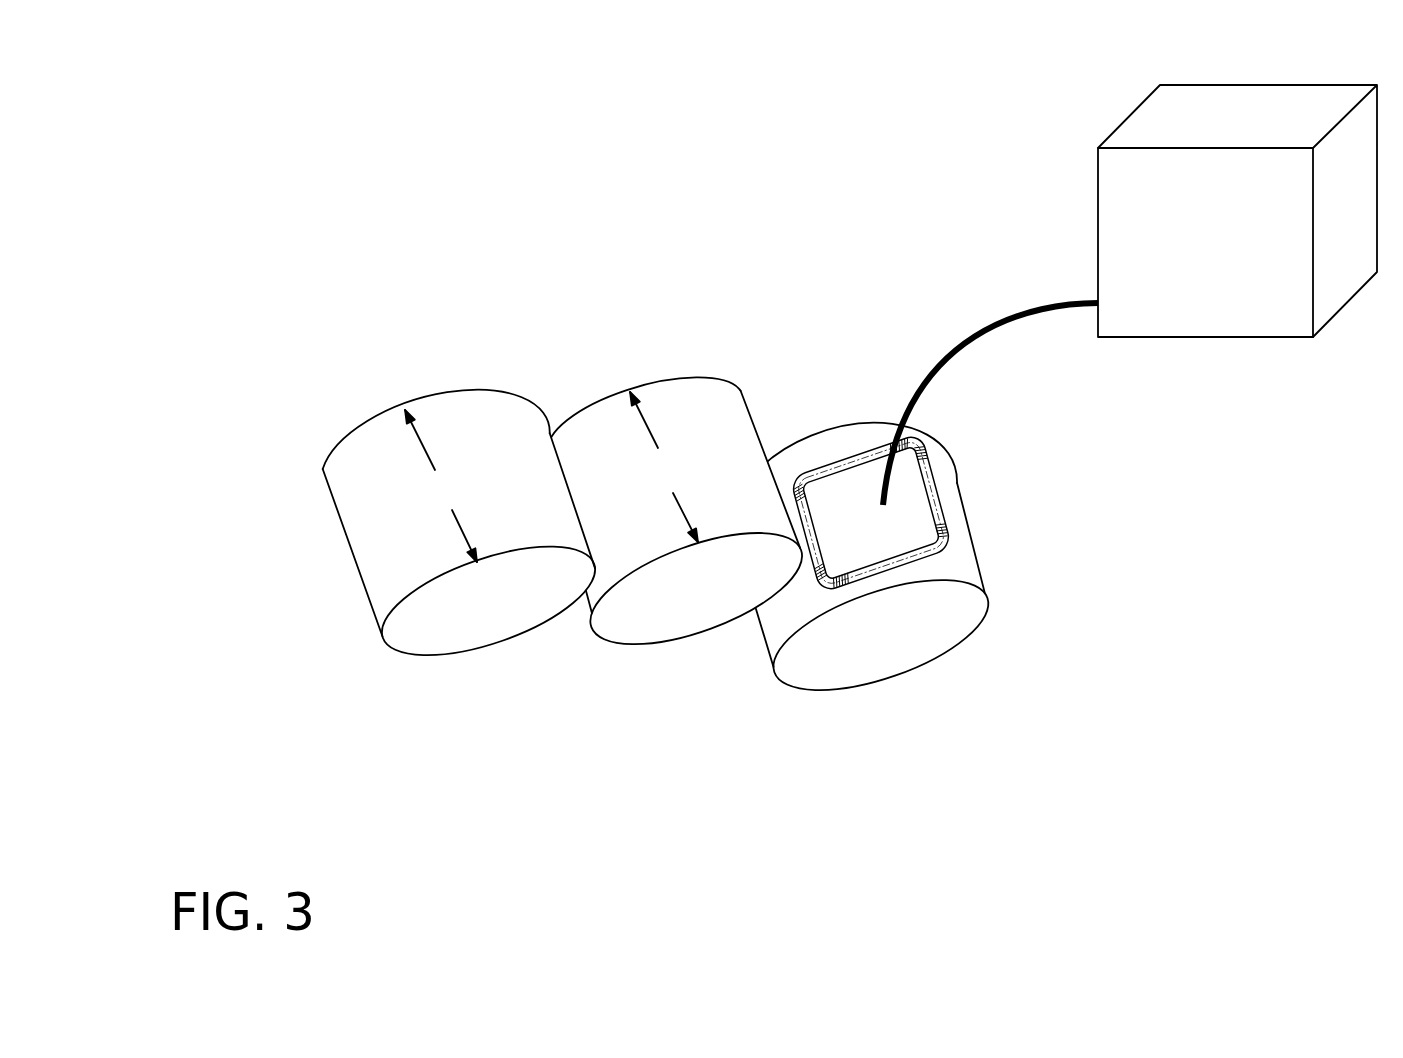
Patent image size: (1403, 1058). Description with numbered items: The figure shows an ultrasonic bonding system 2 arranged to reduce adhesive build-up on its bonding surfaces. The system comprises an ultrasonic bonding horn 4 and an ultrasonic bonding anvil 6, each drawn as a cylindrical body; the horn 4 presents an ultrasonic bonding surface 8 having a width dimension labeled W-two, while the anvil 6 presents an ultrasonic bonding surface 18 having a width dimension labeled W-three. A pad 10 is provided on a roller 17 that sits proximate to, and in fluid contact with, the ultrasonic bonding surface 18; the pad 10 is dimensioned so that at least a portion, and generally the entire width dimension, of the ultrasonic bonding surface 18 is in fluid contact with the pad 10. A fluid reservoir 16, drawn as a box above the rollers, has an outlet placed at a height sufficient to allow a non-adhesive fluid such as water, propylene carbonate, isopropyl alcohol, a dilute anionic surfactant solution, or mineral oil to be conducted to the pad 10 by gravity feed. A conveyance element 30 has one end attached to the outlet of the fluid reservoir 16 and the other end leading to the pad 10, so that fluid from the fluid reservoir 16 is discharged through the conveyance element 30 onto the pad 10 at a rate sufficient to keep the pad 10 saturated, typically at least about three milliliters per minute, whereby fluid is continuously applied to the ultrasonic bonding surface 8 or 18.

The ultrasonic bonding system 2 is at (401, 183).
The ultrasonic bonding horn 4 is at (463, 640).
The ultrasonic bonding anvil 6 is at (638, 625).
The ultrasonic bonding surface 8 is at (465, 554).
The ultrasonic bonding surface 18 is at (696, 557).
The pad 10 is at (885, 523).
The roller 17 is at (927, 638).
The fluid reservoir 16 is at (1228, 303).
The conveyance element 30 is at (995, 325).